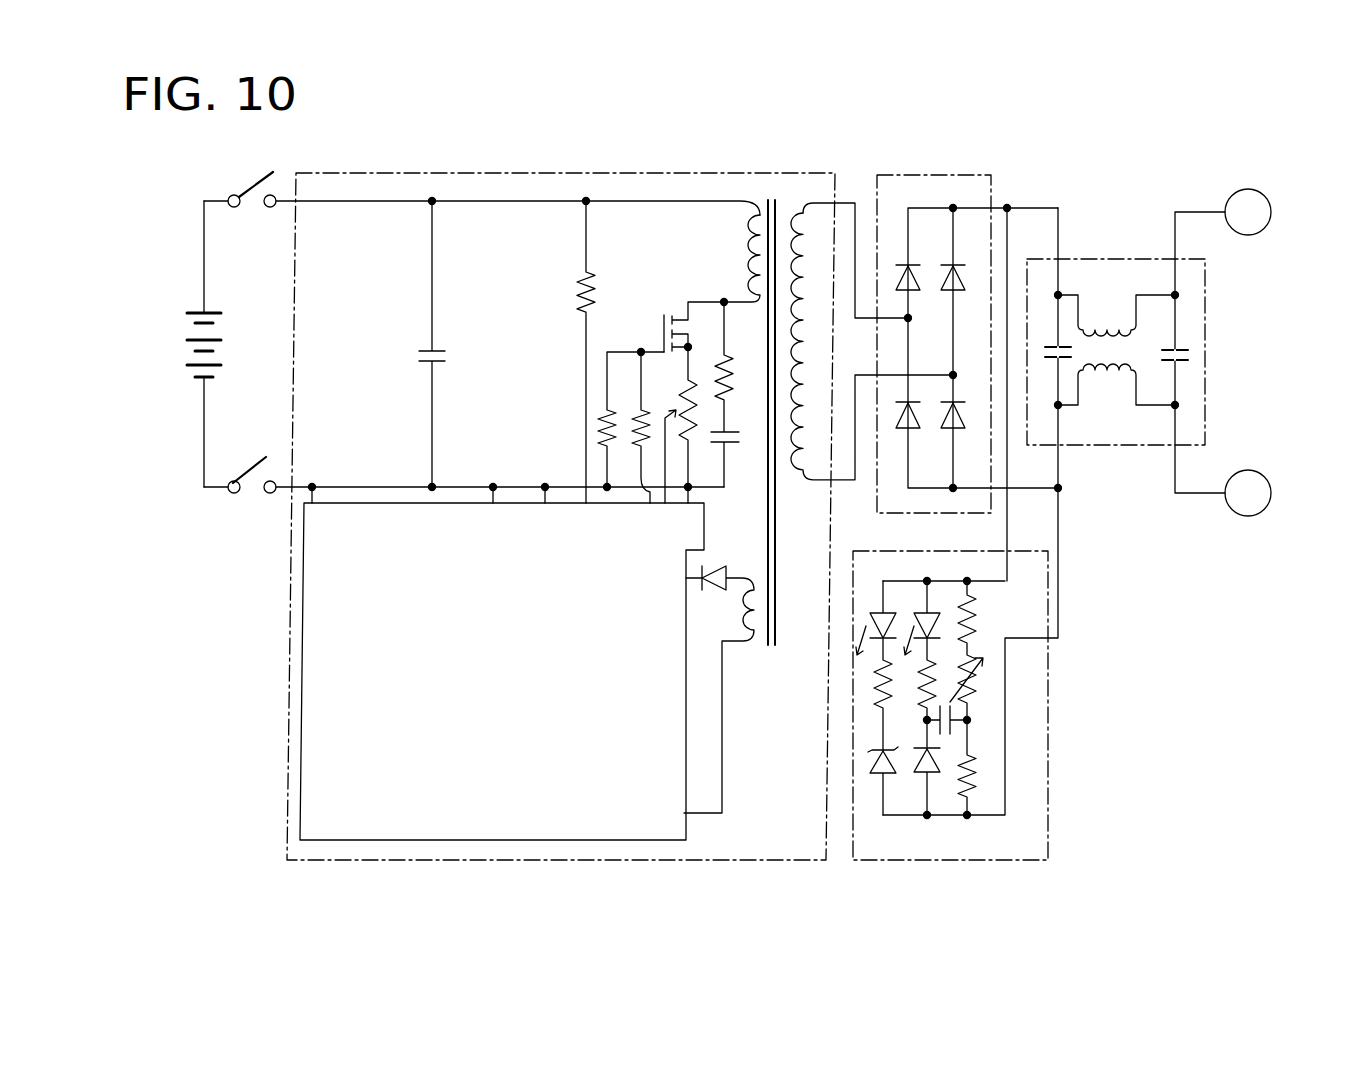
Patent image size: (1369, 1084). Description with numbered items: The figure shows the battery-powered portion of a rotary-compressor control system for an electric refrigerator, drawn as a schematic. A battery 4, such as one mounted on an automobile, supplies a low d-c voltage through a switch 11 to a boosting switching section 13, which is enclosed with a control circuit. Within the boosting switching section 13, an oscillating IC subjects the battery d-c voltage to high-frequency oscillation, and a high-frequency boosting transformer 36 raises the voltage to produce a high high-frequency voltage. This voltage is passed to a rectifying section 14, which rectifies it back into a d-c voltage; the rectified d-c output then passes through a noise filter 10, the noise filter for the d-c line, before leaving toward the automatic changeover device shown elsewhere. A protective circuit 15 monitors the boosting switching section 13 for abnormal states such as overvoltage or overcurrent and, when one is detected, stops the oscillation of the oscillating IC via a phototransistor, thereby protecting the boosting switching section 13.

The battery 4 is at (187, 346).
The noise filter 10 is at (1125, 258).
The switch 11 is at (257, 186).
The boosting switching section 13 is at (650, 158).
The rectifying section 14 is at (991, 176).
The protective circuit 15 is at (918, 905).
The high-frequency boosting transformer 36 is at (768, 650).